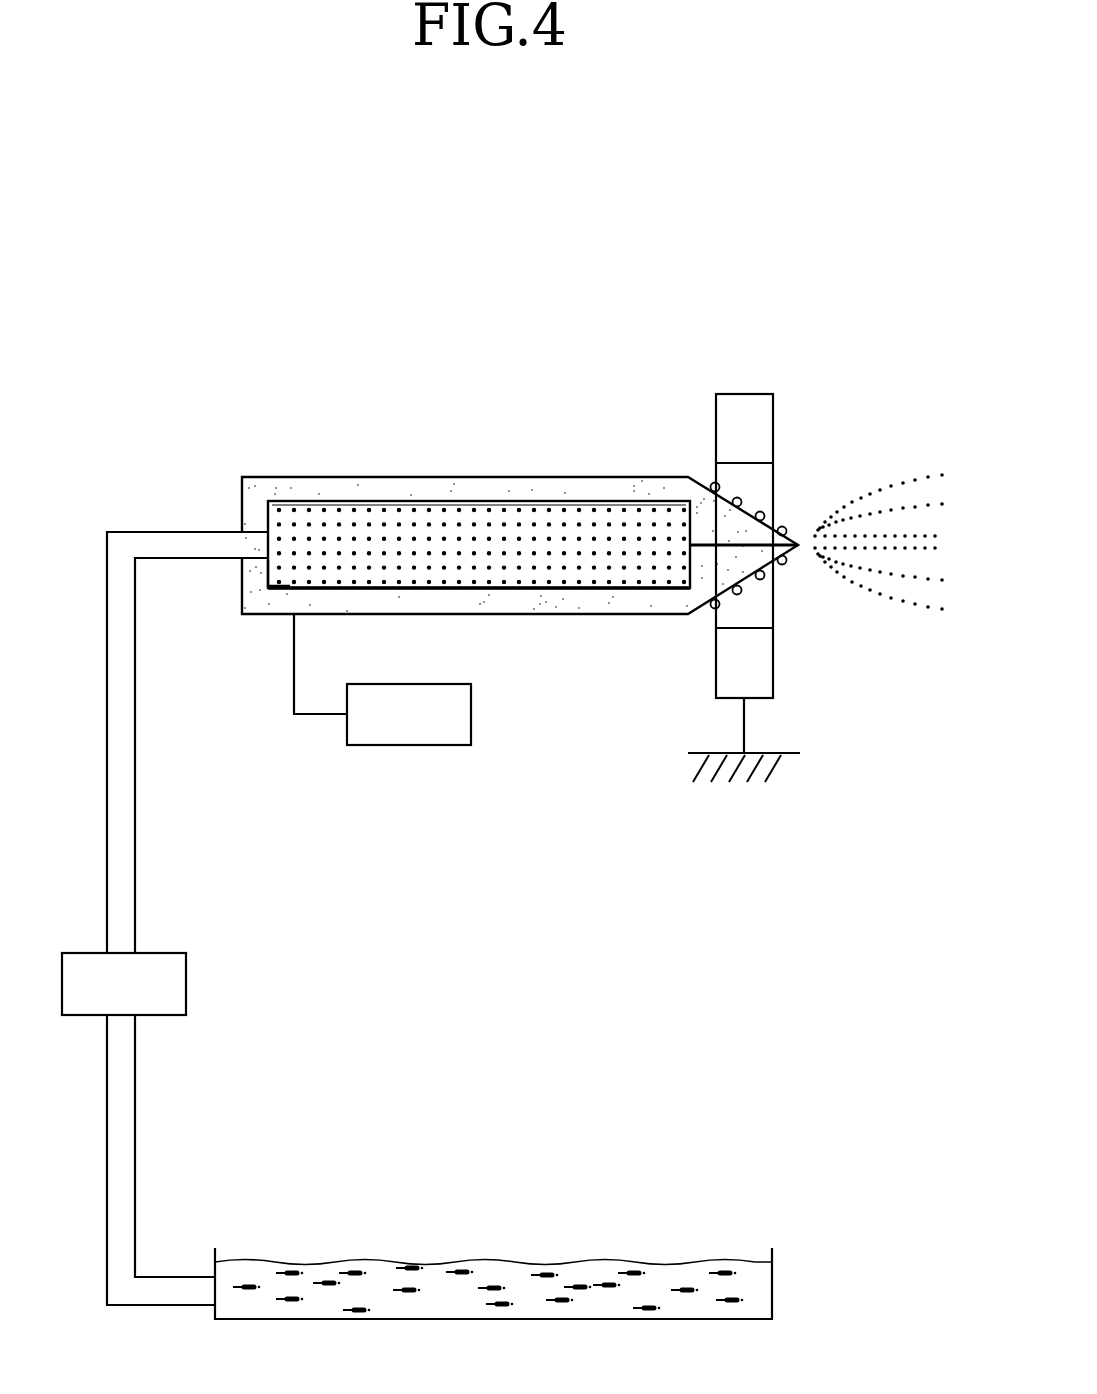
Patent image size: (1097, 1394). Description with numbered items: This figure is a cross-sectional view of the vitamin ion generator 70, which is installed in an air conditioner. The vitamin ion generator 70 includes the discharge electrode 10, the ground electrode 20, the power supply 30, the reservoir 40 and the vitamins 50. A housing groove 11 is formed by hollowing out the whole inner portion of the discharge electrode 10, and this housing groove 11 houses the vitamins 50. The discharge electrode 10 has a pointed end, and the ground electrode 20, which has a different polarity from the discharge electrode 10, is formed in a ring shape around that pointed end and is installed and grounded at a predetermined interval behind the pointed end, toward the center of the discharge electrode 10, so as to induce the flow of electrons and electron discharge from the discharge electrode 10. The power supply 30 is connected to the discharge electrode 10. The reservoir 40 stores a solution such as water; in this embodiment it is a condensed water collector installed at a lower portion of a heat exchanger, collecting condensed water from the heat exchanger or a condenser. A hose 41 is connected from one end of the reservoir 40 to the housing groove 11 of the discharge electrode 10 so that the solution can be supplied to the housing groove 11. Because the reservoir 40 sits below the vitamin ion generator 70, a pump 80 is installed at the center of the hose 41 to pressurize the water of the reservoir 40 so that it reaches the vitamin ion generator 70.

The discharge electrode 10 is at (578, 428).
The housing groove 11 is at (445, 504).
The ground electrode 20 is at (743, 394).
The power supply 30 is at (380, 745).
The reservoir 40 is at (747, 1282).
The hose 41 is at (135, 882).
The vitamins 50 is at (285, 567).
The vitamin ion generator 70 is at (605, 745).
The pump 80 is at (186, 981).